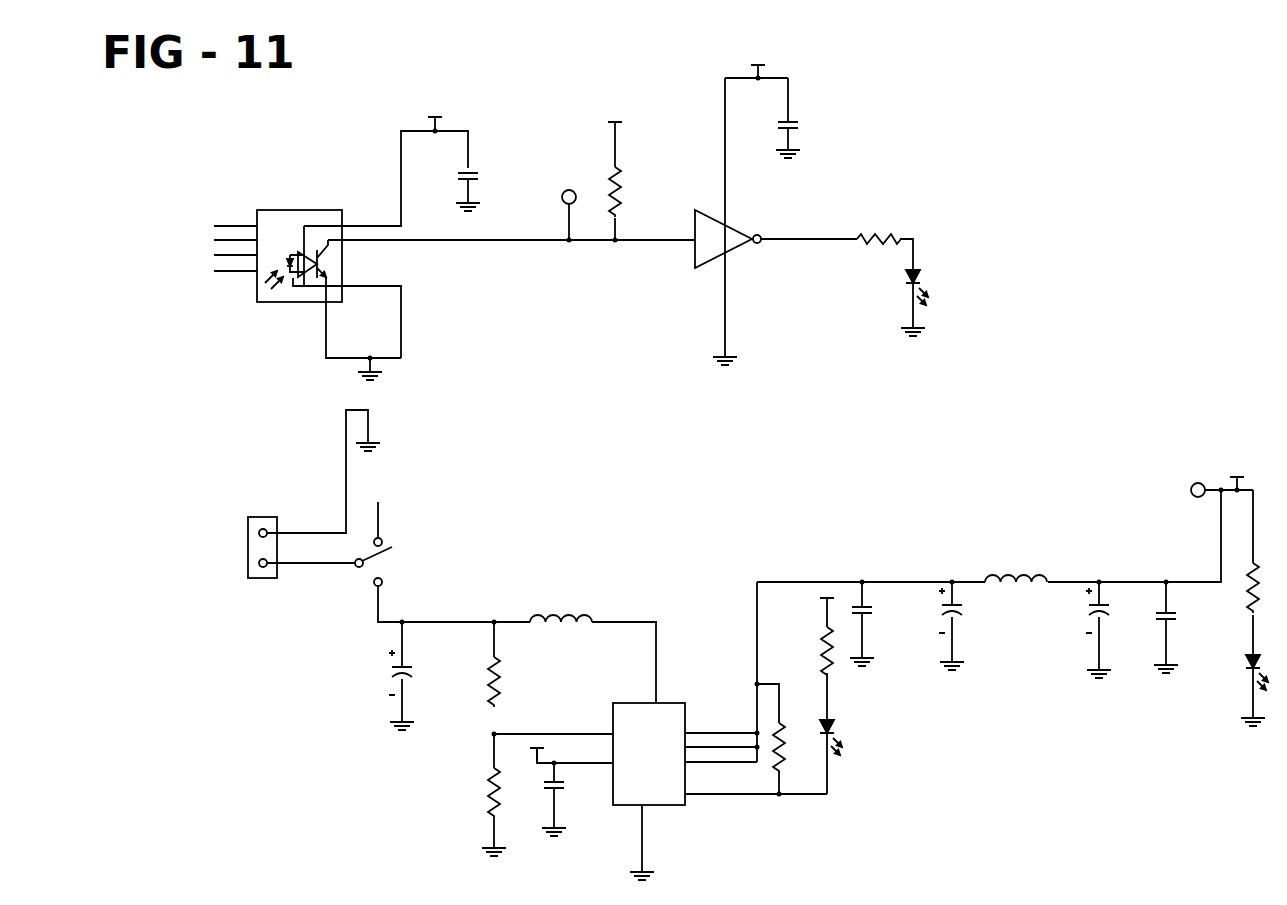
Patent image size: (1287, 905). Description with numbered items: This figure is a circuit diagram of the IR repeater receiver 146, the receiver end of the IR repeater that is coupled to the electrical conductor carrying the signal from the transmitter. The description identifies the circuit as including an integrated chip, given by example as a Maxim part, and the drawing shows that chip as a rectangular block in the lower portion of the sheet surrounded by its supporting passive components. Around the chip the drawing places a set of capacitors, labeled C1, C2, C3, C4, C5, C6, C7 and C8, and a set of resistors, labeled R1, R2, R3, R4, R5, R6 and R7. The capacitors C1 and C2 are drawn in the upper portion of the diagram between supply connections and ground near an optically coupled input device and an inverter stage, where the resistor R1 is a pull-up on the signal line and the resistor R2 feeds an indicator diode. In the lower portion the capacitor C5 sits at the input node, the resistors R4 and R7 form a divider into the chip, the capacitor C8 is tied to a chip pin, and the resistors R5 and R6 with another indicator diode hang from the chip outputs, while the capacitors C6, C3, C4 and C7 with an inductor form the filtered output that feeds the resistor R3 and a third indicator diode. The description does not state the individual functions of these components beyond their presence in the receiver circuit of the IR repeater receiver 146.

The IR repeater receiver 146 is at (1002, 243).
The capacitor C1 is at (799, 138).
The capacitor C2 is at (479, 191).
The capacitor C3 is at (967, 629).
The capacitor C4 is at (1111, 633).
The capacitor C5 is at (416, 676).
The capacitor C6 is at (874, 634).
The capacitor C7 is at (1179, 641).
The capacitor C8 is at (565, 806).
The resistor R1 is at (627, 181).
The resistor R2 is at (892, 257).
The resistor R3 is at (1261, 608).
The resistor R4 is at (507, 664).
The resistor R5 is at (820, 696).
The resistor R6 is at (791, 748).
The resistor R7 is at (504, 812).